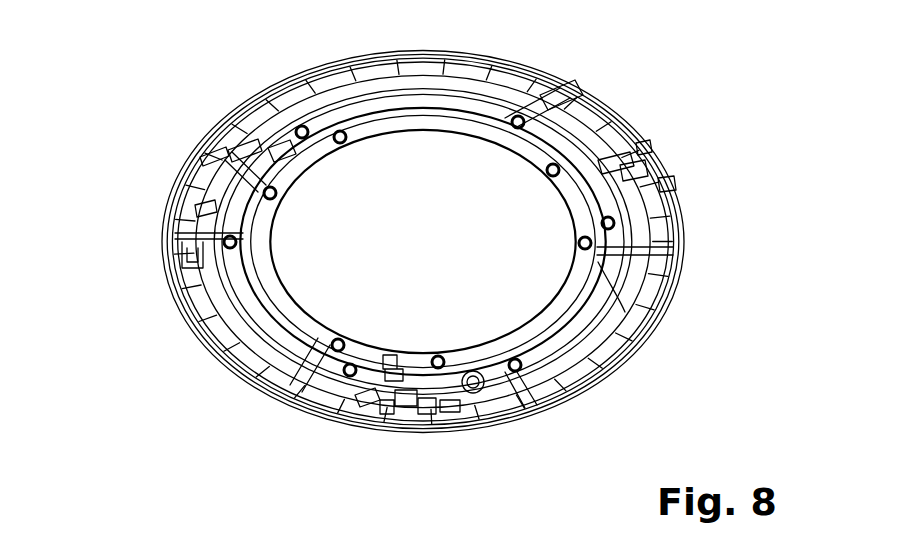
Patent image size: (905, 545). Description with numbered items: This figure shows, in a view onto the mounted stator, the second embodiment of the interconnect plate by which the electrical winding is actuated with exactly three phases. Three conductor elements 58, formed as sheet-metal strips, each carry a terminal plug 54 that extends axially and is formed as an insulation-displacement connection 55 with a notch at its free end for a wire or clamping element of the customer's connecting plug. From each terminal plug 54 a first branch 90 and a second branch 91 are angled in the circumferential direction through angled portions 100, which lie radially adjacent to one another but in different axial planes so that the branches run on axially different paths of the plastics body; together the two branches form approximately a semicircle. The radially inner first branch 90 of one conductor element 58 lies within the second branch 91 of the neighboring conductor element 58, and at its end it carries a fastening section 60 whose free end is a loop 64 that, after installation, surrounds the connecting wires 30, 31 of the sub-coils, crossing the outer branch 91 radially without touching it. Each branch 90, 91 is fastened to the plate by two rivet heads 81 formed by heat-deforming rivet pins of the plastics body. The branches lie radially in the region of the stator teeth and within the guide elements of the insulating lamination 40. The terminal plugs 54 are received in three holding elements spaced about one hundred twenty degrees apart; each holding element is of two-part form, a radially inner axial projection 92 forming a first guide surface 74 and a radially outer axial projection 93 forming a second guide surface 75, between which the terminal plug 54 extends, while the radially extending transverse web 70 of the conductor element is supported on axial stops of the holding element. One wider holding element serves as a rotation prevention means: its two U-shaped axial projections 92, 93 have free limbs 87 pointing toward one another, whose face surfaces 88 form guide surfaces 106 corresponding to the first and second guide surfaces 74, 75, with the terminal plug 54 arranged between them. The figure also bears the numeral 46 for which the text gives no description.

The connecting wire 30 is at (443, 62).
The connecting wire 31 is at (575, 156).
The insulating lamination 40 is at (633, 338).
The bracket 46 is at (197, 210).
The terminal plug 54 is at (441, 355).
The insulation-displacement connection 55 is at (648, 170).
The conductor element 58 is at (610, 140).
The fastening section 60 is at (564, 57).
The loop 64 is at (556, 100).
The transverse web 70 is at (205, 152).
The first guide surface 74 is at (270, 148).
The second guide surface 75 is at (197, 157).
The rivet head 81 is at (339, 130).
The free limb 87 is at (450, 413).
The face surface 88 is at (397, 372).
The first branch 90 is at (441, 124).
The second branch 91 is at (612, 292).
The radially inner axial projection 92 is at (358, 393).
The radially outer axial projection 93 is at (423, 413).
The angled portion 100 is at (643, 148).
The guide surface 106 is at (388, 382).